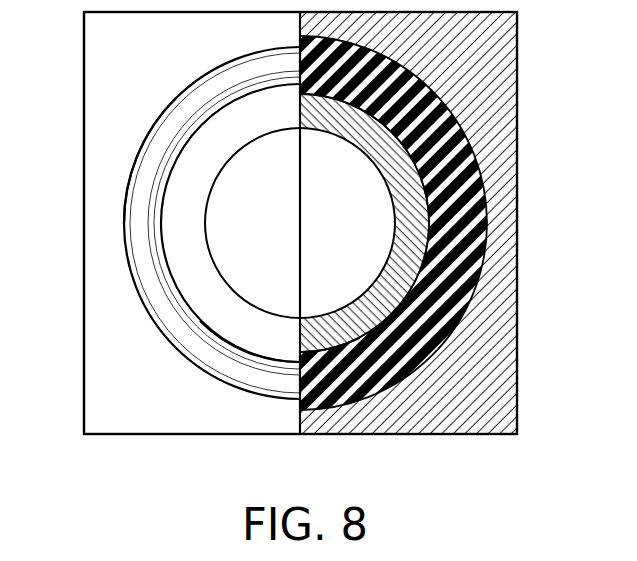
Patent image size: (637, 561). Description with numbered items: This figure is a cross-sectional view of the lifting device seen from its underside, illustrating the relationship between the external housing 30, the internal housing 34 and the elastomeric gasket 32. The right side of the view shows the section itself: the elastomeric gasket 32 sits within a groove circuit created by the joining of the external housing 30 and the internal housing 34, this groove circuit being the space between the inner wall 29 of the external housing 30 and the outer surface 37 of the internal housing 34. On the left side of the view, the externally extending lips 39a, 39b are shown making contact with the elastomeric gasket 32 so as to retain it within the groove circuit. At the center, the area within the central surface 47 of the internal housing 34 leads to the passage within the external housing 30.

The inner wall 29 is at (448, 92).
The external housing 30 is at (93, 340).
The elastomeric gasket 32 is at (197, 94).
The internal housing 34 is at (330, 112).
The outer surface 37 is at (335, 349).
The externally extending lip 39a is at (123, 183).
The externally extending lip 39b is at (247, 360).
The central surface 47 is at (217, 177).